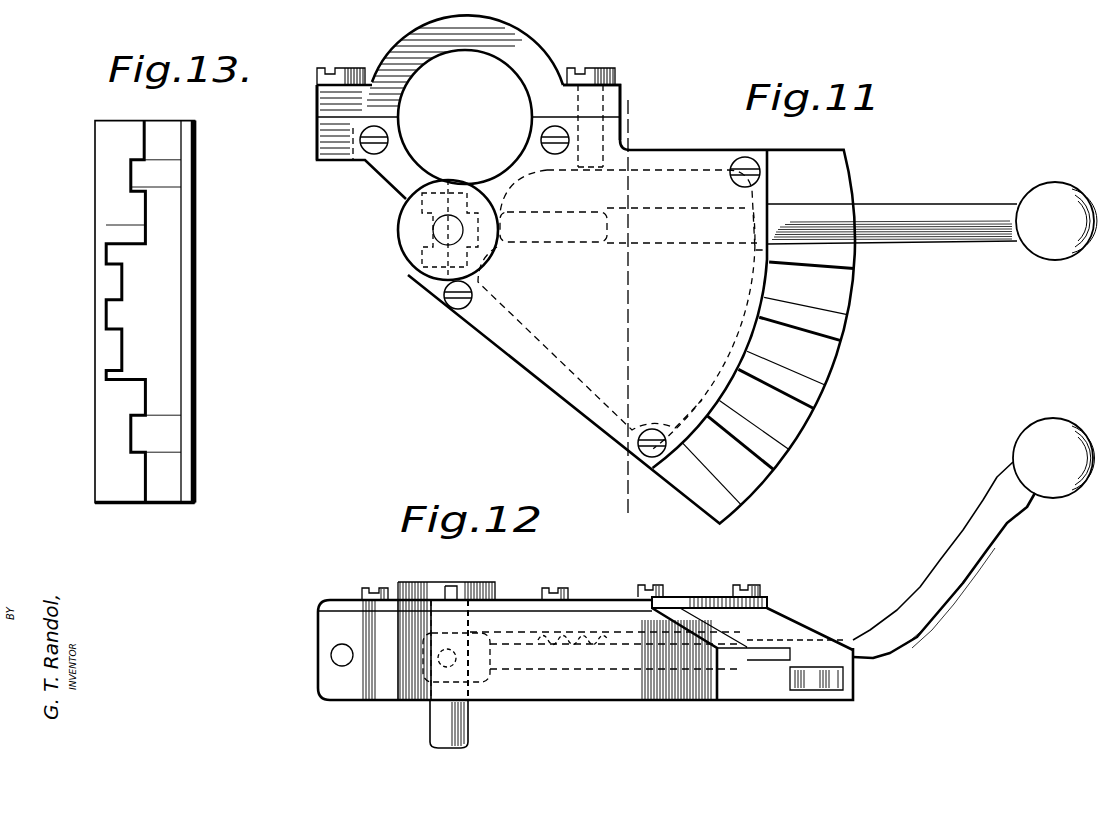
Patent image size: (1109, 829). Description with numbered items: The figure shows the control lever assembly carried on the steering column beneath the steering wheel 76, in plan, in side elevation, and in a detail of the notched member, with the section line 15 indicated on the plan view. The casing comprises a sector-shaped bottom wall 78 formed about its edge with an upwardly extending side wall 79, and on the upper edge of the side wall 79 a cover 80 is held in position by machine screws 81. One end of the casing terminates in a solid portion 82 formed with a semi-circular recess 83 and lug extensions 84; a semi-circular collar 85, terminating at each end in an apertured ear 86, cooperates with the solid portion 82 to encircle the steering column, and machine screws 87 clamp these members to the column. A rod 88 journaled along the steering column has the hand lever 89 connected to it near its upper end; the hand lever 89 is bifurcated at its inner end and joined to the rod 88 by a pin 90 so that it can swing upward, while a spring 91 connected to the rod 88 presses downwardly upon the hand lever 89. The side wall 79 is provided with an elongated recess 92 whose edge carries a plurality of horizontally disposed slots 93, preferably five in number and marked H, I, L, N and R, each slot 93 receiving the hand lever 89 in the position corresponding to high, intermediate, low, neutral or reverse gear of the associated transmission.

In FIG. 11, the section line 15 is at (636, 306).
In FIG. 13, the steering wheel 76 is at (110, 150).
In FIG. 12, the bottom wall 78 is at (765, 709).
In FIG. 12, the side wall 79 is at (612, 662).
In FIG. 11, the cover 80 is at (586, 304).
In FIG. 12, the cover 80 is at (597, 606).
In FIG. 13, the cover 80 is at (195, 387).
In FIG. 11, the machine screws 81 is at (652, 430).
In FIG. 12, the machine screws 81 is at (542, 592).
In FIG. 11, the solid portion 82 is at (410, 184).
In FIG. 11, the semi-circular recess 83 is at (412, 158).
In FIG. 11, the lug extensions 84 is at (341, 152).
In FIG. 11, the semi-circular collar 85 is at (522, 46).
In FIG. 11, the apertured ear 86 is at (372, 98).
In FIG. 11, the machine screws 87 is at (342, 74).
In FIG. 12, the rod 88 is at (441, 728).
In FIG. 11, the hand lever 89 is at (953, 230).
In FIG. 12, the hand lever 89 is at (882, 656).
In FIG. 12, the pin 90 is at (400, 700).
In FIG. 12, the spring 91 is at (546, 682).
In FIG. 12, the elongated recess 92 is at (758, 627).
In FIG. 11, the slots 93 is at (832, 292).
In FIG. 13, the slots 93 is at (107, 238).